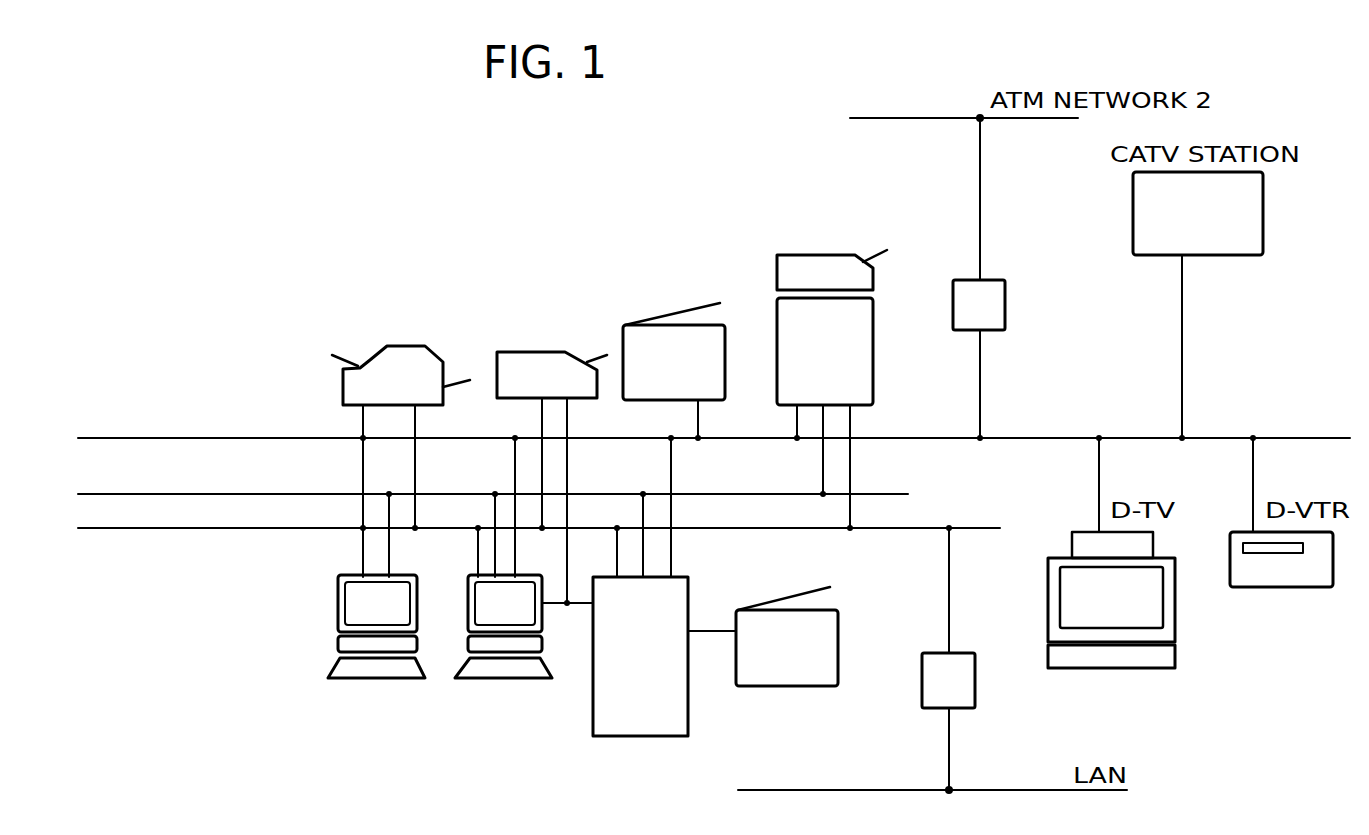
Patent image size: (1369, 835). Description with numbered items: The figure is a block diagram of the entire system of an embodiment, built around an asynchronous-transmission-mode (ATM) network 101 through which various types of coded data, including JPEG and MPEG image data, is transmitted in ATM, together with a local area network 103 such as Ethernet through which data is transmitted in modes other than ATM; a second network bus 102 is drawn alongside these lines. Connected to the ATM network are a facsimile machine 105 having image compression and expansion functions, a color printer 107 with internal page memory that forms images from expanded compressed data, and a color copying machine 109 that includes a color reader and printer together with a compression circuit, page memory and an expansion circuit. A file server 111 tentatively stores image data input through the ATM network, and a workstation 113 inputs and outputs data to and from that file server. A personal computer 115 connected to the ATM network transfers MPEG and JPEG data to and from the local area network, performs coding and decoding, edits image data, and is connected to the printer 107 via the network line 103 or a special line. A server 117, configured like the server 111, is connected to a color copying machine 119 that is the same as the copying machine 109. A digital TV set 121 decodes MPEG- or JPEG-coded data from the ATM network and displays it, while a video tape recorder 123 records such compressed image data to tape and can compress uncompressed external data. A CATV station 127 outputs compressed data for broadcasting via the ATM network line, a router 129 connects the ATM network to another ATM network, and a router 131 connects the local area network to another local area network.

The asynchronous-transmission-mode (ATM) network 101 is at (902, 438).
The Ethernet LAN 1 102 is at (897, 494).
The local area network 103 is at (980, 528).
The facsimile machine 105 is at (401, 343).
The color printer 107 is at (521, 350).
The color copying machine 109 is at (669, 318).
The file server 111 is at (813, 255).
The workstation 113 is at (385, 682).
The personal computer 115 is at (513, 682).
The server 117 is at (645, 740).
The color copying machine 119 is at (800, 690).
The digital TV set 121 is at (1123, 670).
The video tape recorder (VTR) 123 is at (1288, 590).
The CATV station 127 is at (1263, 223).
The router 129 is at (1007, 307).
The router 131 is at (975, 698).